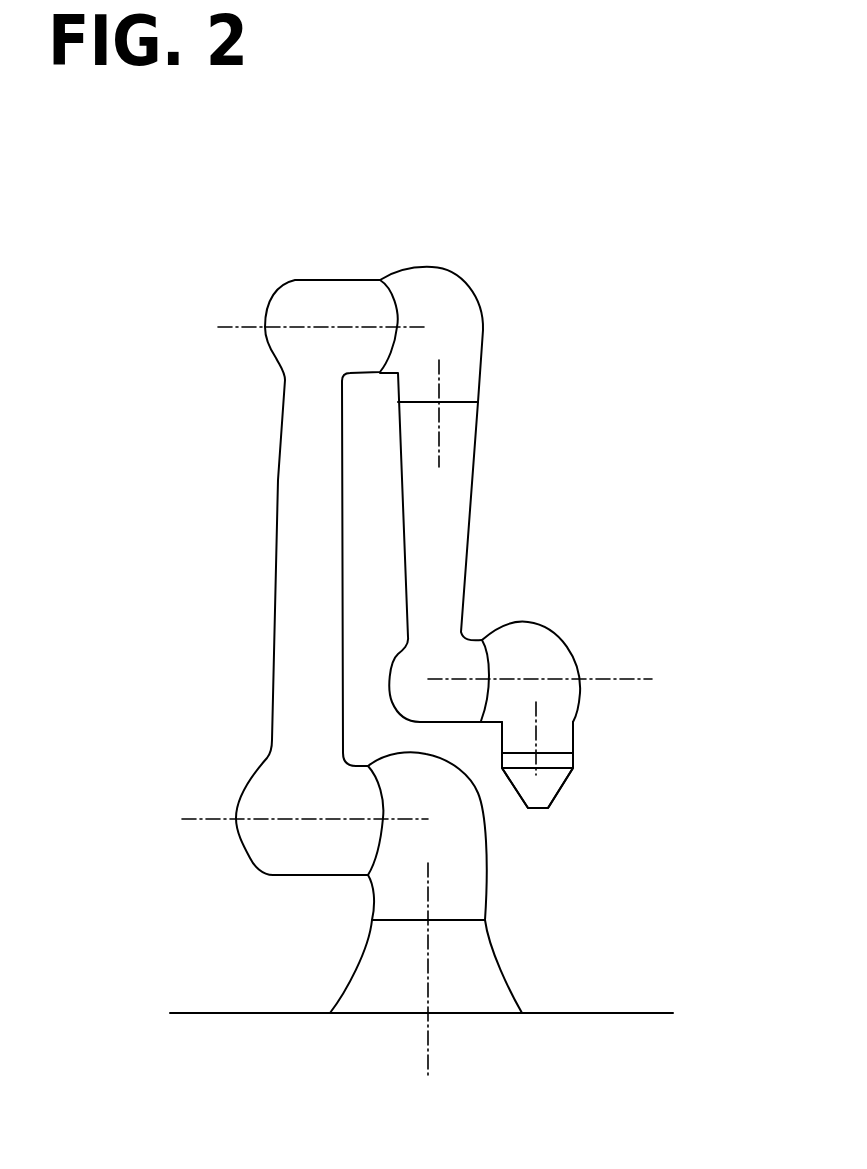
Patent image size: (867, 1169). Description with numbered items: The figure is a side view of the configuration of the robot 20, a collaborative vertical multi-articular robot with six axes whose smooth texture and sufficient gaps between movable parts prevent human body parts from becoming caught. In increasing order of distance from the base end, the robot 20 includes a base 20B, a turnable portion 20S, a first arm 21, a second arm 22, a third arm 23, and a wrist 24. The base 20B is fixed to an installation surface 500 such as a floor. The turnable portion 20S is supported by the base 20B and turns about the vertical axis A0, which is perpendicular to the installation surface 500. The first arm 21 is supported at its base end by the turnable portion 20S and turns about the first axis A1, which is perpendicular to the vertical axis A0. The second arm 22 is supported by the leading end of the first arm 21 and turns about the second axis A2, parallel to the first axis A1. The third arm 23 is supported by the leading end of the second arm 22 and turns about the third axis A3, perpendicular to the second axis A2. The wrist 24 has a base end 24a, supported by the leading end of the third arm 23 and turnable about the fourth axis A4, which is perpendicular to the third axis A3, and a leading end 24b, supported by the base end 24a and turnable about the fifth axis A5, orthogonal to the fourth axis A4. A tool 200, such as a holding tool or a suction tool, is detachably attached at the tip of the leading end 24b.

The robot 20 is at (622, 460).
The first arm 21 is at (305, 560).
The second arm 22 is at (452, 315).
The third arm 23 is at (435, 518).
The wrist 24 is at (717, 587).
The base end 24a is at (528, 648).
The leading end 24b is at (557, 760).
The tool 200 is at (547, 790).
The turnable portion 20S is at (450, 867).
The base 20B is at (470, 980).
The installation surface 500 is at (625, 1013).
The vertical axis A0 is at (428, 1030).
The first axis A1 is at (292, 818).
The second axis A2 is at (317, 325).
The third axis A3 is at (443, 417).
The fourth axis A4 is at (597, 678).
The fifth axis A5 is at (540, 740).